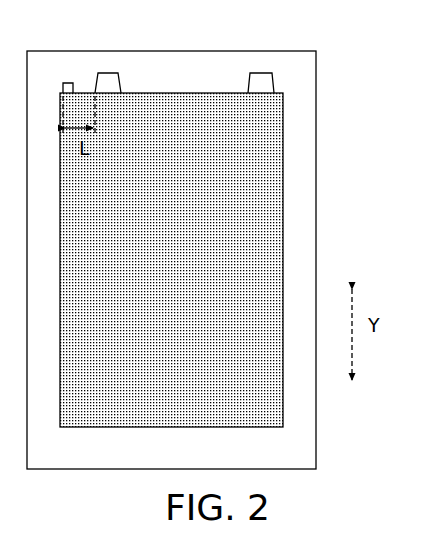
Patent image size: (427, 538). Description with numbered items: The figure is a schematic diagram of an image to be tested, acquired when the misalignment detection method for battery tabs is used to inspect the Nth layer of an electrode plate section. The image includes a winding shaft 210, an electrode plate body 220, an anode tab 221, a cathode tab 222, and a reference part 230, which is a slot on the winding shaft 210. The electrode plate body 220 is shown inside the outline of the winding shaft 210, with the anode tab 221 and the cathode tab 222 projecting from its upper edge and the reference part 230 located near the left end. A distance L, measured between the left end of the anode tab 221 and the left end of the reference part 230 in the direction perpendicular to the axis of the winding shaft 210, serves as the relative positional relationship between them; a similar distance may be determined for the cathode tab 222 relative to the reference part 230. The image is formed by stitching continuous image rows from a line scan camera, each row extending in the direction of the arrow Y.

The winding shaft 210 is at (307, 88).
The electrode plate body 220 is at (270, 143).
The anode tab 221 is at (121, 72).
The cathode tab 222 is at (268, 80).
The reference part 230 is at (64, 82).